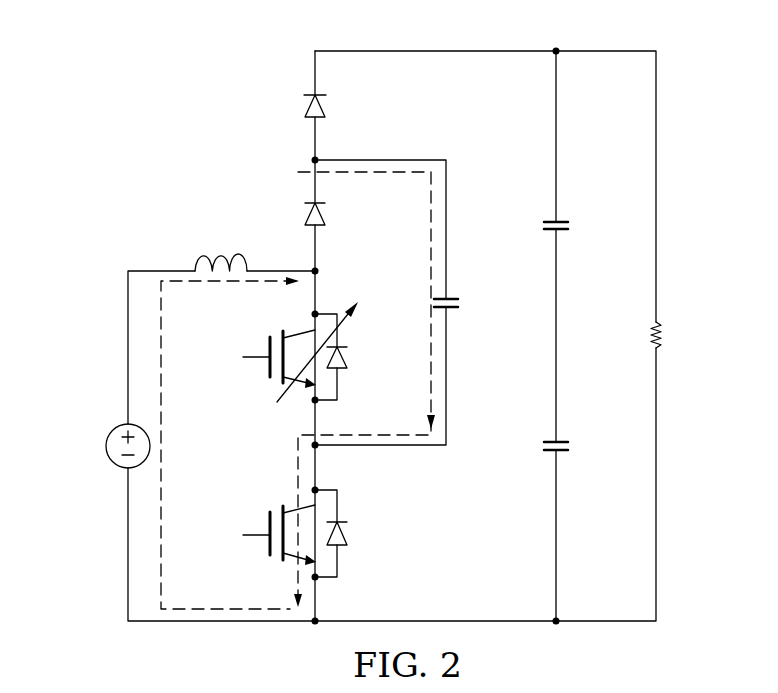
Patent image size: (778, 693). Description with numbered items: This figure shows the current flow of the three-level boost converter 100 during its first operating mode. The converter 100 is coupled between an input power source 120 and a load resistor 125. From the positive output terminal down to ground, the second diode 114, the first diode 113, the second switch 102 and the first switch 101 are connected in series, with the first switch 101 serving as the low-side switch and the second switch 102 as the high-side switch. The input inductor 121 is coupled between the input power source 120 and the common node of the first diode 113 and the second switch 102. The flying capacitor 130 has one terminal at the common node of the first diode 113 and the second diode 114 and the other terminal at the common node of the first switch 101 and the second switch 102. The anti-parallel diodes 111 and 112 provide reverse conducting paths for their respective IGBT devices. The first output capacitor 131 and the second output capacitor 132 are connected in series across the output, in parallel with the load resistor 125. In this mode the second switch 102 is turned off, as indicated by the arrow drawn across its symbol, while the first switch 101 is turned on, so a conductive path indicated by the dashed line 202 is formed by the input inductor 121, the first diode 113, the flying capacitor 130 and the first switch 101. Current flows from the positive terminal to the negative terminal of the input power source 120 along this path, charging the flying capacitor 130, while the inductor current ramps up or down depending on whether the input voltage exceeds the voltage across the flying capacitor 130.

The multi-level boost converter 100 is at (182, 98).
The first switch Q1 101 is at (270, 545).
The second switch Q2 102 is at (272, 367).
The diode D1 111 is at (347, 530).
The diode D2 112 is at (347, 352).
The first diode D3 113 is at (325, 215).
The second diode D4 114 is at (306, 100).
The input power source VIN 120 is at (106, 445).
The input inductor L 121 is at (222, 253).
The load RL 125 is at (660, 340).
The flying capacitor Cdc 130 is at (457, 303).
The first output capacitor C1 131 is at (567, 227).
The second output capacitor C2 132 is at (567, 447).
The dashed line 202 is at (222, 283).